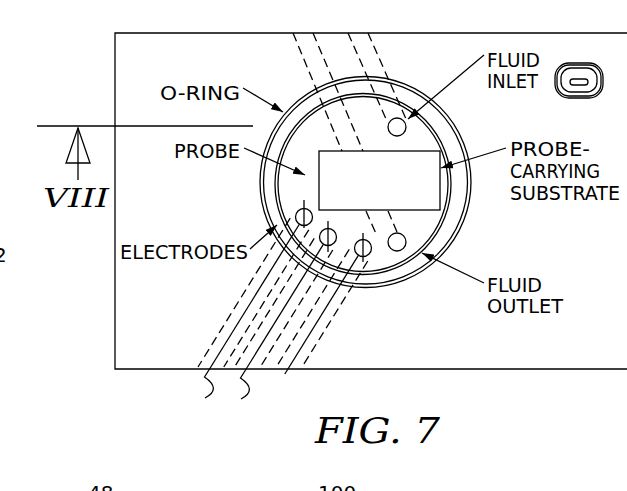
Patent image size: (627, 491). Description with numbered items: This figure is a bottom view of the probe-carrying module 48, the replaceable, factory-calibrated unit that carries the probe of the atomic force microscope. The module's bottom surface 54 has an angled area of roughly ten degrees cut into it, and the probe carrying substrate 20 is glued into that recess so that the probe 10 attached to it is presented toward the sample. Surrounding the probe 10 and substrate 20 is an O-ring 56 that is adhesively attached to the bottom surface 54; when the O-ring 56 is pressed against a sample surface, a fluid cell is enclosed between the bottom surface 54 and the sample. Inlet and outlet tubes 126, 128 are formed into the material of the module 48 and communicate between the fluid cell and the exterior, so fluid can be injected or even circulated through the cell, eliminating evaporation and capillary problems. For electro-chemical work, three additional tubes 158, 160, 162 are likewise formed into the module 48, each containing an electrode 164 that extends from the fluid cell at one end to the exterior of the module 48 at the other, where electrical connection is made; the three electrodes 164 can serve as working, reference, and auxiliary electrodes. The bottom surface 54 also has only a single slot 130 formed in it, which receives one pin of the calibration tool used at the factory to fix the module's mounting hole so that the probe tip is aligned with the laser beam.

The probe 10 is at (319, 182).
The probe carrying substrate 20 is at (432, 197).
The probe-carrying module 48 is at (133, 386).
The bottom surface 54 is at (605, 266).
The O-ring 56 is at (387, 271).
The inlet tube 126 is at (370, 54).
The outlet tube 128 is at (307, 56).
The slot 130 is at (568, 90).
The additional tube 158 is at (252, 287).
The additional tube 160 is at (272, 315).
The additional tube 162 is at (323, 323).
The electrode 164 is at (284, 375).